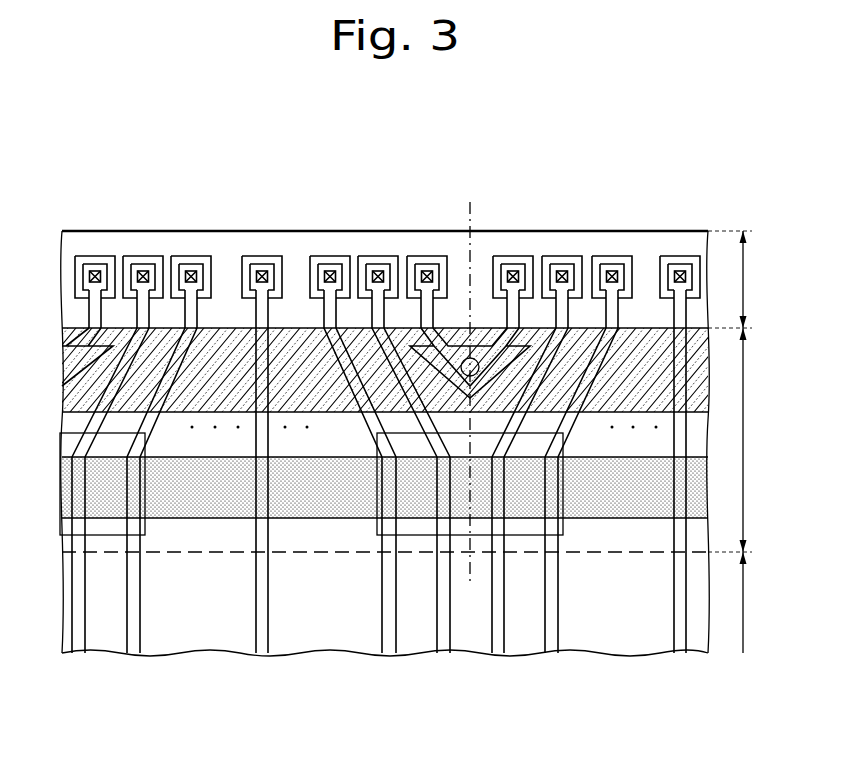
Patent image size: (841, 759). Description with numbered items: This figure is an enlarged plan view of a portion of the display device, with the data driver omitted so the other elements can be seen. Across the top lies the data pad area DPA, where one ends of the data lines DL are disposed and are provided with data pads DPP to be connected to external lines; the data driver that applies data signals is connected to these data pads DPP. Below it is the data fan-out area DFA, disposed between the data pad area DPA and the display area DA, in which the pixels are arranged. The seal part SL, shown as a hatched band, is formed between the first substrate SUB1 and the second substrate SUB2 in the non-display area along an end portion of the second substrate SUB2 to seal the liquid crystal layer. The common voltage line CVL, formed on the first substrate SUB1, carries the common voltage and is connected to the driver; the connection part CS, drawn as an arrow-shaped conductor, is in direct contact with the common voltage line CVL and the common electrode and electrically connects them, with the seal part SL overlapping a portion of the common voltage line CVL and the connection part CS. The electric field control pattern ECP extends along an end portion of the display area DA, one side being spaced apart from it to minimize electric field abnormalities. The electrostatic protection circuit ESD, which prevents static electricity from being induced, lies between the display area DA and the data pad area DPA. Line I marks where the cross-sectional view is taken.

The data pad DPP is at (260, 272).
The electric field control pattern ECP is at (370, 332).
The connection part CS is at (468, 330).
The common voltage line CVL is at (521, 310).
The first substrate SUB1 is at (580, 231).
The second substrate SUB2 is at (640, 328).
The seal part SL is at (58, 330).
The electrostatic protection circuit ESD is at (58, 455).
The data line DL is at (264, 596).
The data pad area DPA is at (747, 279).
The data fan-out area DFA is at (747, 440).
The display area DA is at (757, 602).
The line I-I' I is at (472, 391).